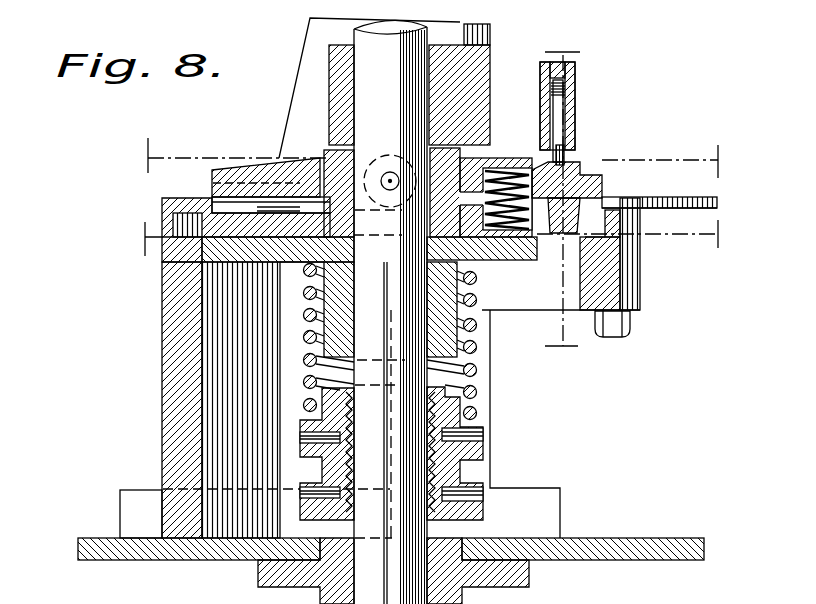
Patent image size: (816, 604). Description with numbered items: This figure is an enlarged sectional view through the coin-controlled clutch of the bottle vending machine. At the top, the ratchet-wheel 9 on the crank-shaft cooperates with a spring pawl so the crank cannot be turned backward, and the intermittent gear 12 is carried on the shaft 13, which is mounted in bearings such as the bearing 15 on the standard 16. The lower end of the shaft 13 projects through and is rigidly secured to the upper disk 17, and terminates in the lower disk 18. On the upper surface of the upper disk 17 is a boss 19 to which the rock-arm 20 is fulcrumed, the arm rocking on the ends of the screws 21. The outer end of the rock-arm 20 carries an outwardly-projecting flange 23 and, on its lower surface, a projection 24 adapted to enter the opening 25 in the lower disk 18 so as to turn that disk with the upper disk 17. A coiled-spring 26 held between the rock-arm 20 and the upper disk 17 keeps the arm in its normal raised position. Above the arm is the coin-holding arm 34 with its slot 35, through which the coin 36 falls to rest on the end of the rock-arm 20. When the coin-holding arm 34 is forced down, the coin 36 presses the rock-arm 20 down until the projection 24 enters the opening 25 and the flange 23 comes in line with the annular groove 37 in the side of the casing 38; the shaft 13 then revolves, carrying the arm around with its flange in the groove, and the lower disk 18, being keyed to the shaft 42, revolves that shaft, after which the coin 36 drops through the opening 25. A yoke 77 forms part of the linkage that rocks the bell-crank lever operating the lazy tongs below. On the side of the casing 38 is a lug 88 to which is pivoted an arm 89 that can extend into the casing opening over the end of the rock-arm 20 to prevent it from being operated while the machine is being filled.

The ratchet-wheel 9 is at (562, 201).
The intermittent gear 12 is at (431, 238).
The shaft 13 is at (362, 80).
The bearing 15 is at (487, 90).
The standard 16 is at (290, 113).
The upper disk 17 is at (291, 222).
The lower disk 18 is at (512, 252).
The boss 19 is at (326, 157).
The rock-arm 20 is at (500, 166).
The screws 21 is at (390, 172).
The outwardly-projecting flange 23 is at (600, 178).
The projection 24 is at (564, 234).
The opening 25 is at (572, 247).
The coiled-spring 26 is at (572, 128).
The coin-holding arm 34 is at (576, 88).
The slot 35 is at (541, 100).
The coin 36 is at (567, 160).
The annular groove 37 is at (183, 200).
The casing 38 is at (164, 383).
The shaft 42 is at (463, 405).
The yoke 77 is at (433, 158).
The lug 88 is at (625, 280).
The arm 89 is at (719, 203).